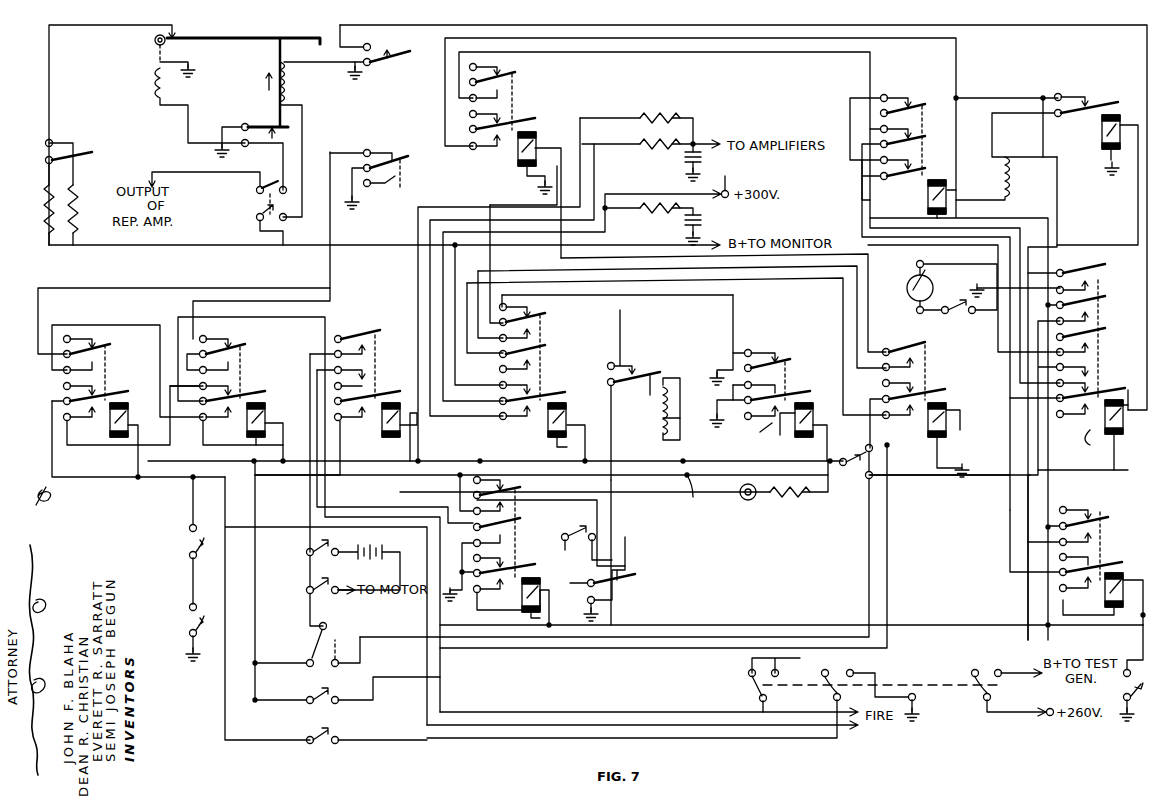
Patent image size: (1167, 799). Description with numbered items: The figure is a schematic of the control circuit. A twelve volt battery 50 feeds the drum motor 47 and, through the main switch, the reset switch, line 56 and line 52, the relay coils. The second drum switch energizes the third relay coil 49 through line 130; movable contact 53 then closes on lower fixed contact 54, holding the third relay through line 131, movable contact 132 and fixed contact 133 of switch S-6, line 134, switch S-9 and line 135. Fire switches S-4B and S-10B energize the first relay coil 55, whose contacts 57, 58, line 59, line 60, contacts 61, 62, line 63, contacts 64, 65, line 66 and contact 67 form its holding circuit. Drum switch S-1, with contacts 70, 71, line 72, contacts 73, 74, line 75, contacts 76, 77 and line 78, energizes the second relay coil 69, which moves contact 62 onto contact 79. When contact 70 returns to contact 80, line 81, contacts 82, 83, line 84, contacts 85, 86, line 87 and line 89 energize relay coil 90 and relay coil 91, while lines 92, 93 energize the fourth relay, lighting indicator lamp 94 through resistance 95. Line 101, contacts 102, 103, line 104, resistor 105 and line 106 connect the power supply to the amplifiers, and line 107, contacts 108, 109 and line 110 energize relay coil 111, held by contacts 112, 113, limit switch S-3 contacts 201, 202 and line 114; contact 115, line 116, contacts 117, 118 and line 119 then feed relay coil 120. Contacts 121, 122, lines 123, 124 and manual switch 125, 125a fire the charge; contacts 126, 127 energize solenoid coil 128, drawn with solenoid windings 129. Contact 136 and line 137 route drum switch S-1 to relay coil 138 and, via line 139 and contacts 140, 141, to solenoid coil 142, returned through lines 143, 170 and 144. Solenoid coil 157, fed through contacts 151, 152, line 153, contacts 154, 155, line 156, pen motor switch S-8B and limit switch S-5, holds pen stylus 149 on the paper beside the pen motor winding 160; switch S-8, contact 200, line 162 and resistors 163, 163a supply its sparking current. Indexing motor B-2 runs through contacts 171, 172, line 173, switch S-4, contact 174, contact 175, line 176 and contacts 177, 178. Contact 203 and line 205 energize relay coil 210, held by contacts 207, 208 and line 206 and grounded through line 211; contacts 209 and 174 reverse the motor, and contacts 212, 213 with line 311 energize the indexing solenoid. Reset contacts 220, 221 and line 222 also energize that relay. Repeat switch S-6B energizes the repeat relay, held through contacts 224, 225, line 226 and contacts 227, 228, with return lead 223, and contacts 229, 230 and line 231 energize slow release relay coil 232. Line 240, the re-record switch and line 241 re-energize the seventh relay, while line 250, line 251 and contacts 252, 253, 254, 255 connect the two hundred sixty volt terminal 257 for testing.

The drum motor 47 is at (395, 601).
The K-3 relay coil 49 is at (524, 590).
The battery 50 is at (383, 546).
The line 52 is at (300, 600).
The movable contact 53 is at (520, 566).
The lower fixed contact 54 is at (507, 594).
The K-1 relay coil 55 is at (112, 425).
The line 56 is at (245, 541).
The movable relay contact 57 is at (115, 392).
The lower fixed contact 58 is at (82, 424).
The line 59 is at (80, 480).
The line 60 is at (170, 438).
The normally closed contact 61 is at (232, 384).
The movable contact 62 is at (250, 393).
The line 63 is at (182, 317).
The normally closed contact 64 is at (365, 386).
The normally closed contact 65 is at (380, 395).
The line 66 is at (328, 480).
The normally open contact 67 is at (512, 522).
The K-2 relay coil 69 is at (262, 408).
The movable contact 70 is at (404, 168).
The lower fixed contact 71 is at (396, 180).
The line 72 is at (400, 190).
The movable contact 73 is at (535, 118).
The normally closed contact 74 is at (500, 112).
The line 75 is at (145, 288).
The normally open contact 76 is at (110, 344).
The normally open contact 77 is at (92, 362).
The line 78 is at (135, 325).
The lower fixed contact 79 is at (242, 426).
The upper fixed contact 80 is at (395, 152).
The line 81 is at (333, 301).
The movable contact 82 is at (245, 344).
The lower fixed contact 83 is at (230, 362).
The line 84 is at (320, 337).
The movable contact 85 is at (505, 495).
The lower fixed contact 86 is at (505, 512).
The line 87 is at (495, 481).
The line 89 is at (580, 443).
The K-5 relay coil 90 is at (564, 410).
The K-15 relay coil 91 is at (581, 439).
The line 92 is at (448, 480).
The line 93 is at (690, 503).
The indicator lamp 94 is at (748, 500).
The resistance 95 is at (797, 500).
The line 101 is at (675, 180).
The movable relay contact 102 is at (535, 395).
The lower fixed contact 103 is at (516, 422).
The line 104 is at (594, 178).
The resistor 105 is at (637, 153).
The line 106 is at (697, 140).
The line 107 is at (420, 432).
The movable contact 108 is at (532, 345).
The lower fixed contact 109 is at (540, 350).
The line 110 is at (625, 282).
The K-7 relay coil 111 is at (926, 440).
The movable contact 112 is at (945, 392).
The fixed contact 113 is at (912, 385).
The line 114 is at (702, 460).
The upper fixed contact 115 is at (540, 318).
The line 116 is at (510, 268).
The lower fixed contact 117 is at (915, 368).
The movable contact 118 is at (912, 346).
The line 119 is at (545, 196).
The K-8 relay coil 120 is at (533, 138).
The movable contact 121 is at (375, 332).
The fixed contact 122 is at (365, 352).
The line 123 is at (312, 520).
The line 124 is at (310, 506).
The manual switch contact 125 is at (758, 698).
The manual switch contact 125a is at (745, 672).
The movable contact 126 is at (795, 388).
The grounded fixed relay contact 127 is at (770, 408).
The K-6 solenoid coil 128 is at (670, 414).
The relay K-6 winding 129 is at (676, 372).
The line 130 is at (564, 593).
The line 131 is at (611, 497).
The movable contact 132 is at (636, 399).
The fixed contact 133 is at (620, 296).
The line 134 is at (597, 497).
The line 135 is at (565, 563).
The lower fixed relay contact 136 is at (497, 150).
The line 137 is at (690, 52).
The K-9 relay coil 138 is at (947, 195).
The line 139 is at (980, 98).
The normally closed relay contact 140 is at (1085, 97).
The normally closed relay contact 141 is at (1100, 104).
The K-10 solenoid coil 142 is at (1010, 178).
The line 143 is at (1000, 218).
The line 144 is at (650, 625).
The pen stylus 149 is at (290, 38).
The normally closed contact 151 is at (920, 142).
The normally closed contact 152 is at (912, 134).
The line 153 is at (620, 38).
The normally open contact 154 is at (497, 90).
The normally open contact 155 is at (515, 72).
The line 156 is at (283, 235).
The K-11 solenoid coil 157 is at (275, 72).
The pen motor 160 is at (156, 84).
The line 162 is at (378, 259).
The resistor 163 is at (46, 210).
The resistor 163a is at (78, 194).
The line 170 is at (1048, 598).
The upper fixed contact 171 is at (1090, 320).
The movable relay contact 172 is at (1092, 334).
The line 173 is at (950, 264).
The movable contact 174 is at (1120, 392).
The upper fixed contact 175 is at (1090, 370).
The line 176 is at (862, 206).
The movable contact 177 is at (912, 114).
The upper fixed contact 178 is at (908, 96).
The relay contact 200 is at (530, 368).
The mobile contact 201 is at (862, 478).
The fixed contact 202 is at (862, 440).
The fixed contact 203 is at (860, 500).
The line 205 is at (965, 480).
The line 206 is at (1040, 460).
The relay contact 207 is at (1090, 302).
The relay contact 208 is at (1088, 288).
The relay contact 209 is at (1091, 435).
The K-14 relay coil 210 is at (1090, 352).
The line 211 is at (795, 24).
The relay contact 212 is at (1090, 258).
The relay contact 213 is at (1100, 266).
The mobile contact 220 is at (312, 644).
The fixed contact 221 is at (340, 646).
The line 222 is at (370, 636).
The lead 223 is at (1110, 610).
The normally open relay contact 224 is at (1050, 580).
The normally open relay contact 225 is at (1108, 566).
The line 226 is at (1000, 440).
The normally closed relay contact 227 is at (905, 178).
The normally closed relay contact 228 is at (910, 162).
The normally open relay contact 229 is at (1092, 512).
The normally open relay contact 230 is at (1095, 524).
The line 231 is at (1033, 498).
The K-13 relay coil 232 is at (1104, 140).
The line 240 is at (262, 694).
The line 241 is at (375, 680).
The line 250 is at (275, 728).
The line 251 is at (365, 740).
The movable switch contact 252 is at (840, 672).
The grounded fixed switch contact 253 is at (853, 668).
The movable switch contact 254 is at (990, 670).
The fixed switch contact 255 is at (1003, 668).
The power supply terminal 257 is at (1045, 716).
The line 311 is at (1058, 205).
The indexing motor B-2 is at (905, 287).
The drum switch S-1 is at (369, 169).
The limit switch S-3 is at (859, 462).
The switch S-4 is at (946, 314).
The fire switch S-4B is at (209, 540).
The limit switch S-5 is at (347, 51).
The switch S-6 is at (635, 395).
The repeat switch S-6B is at (1140, 700).
The switch S-8 is at (69, 156).
The pen motor switch S-8B is at (218, 208).
The switch S-9 is at (251, 149).
The fire switch S-10B is at (211, 633).